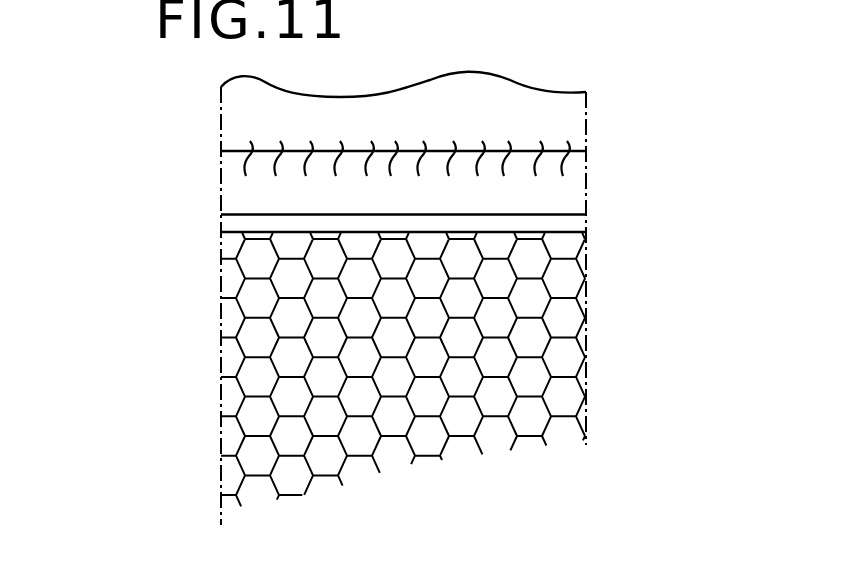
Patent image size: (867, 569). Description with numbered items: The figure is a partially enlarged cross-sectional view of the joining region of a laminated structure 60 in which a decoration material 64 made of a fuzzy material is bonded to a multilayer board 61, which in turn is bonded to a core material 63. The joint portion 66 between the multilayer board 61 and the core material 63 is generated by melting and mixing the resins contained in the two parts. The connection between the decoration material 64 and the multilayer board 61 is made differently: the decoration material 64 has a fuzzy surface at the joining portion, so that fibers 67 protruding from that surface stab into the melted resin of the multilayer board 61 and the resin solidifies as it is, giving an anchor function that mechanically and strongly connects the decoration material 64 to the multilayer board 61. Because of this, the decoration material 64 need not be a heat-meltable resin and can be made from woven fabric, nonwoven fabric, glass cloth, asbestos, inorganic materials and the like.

The laminated absorbent structure 60 is at (207, 420).
The multilayer board 61 is at (568, 187).
The core material 63 is at (563, 357).
The decoration material 64 is at (563, 112).
The joint portion 66 is at (567, 221).
The fibers 67 is at (245, 168).